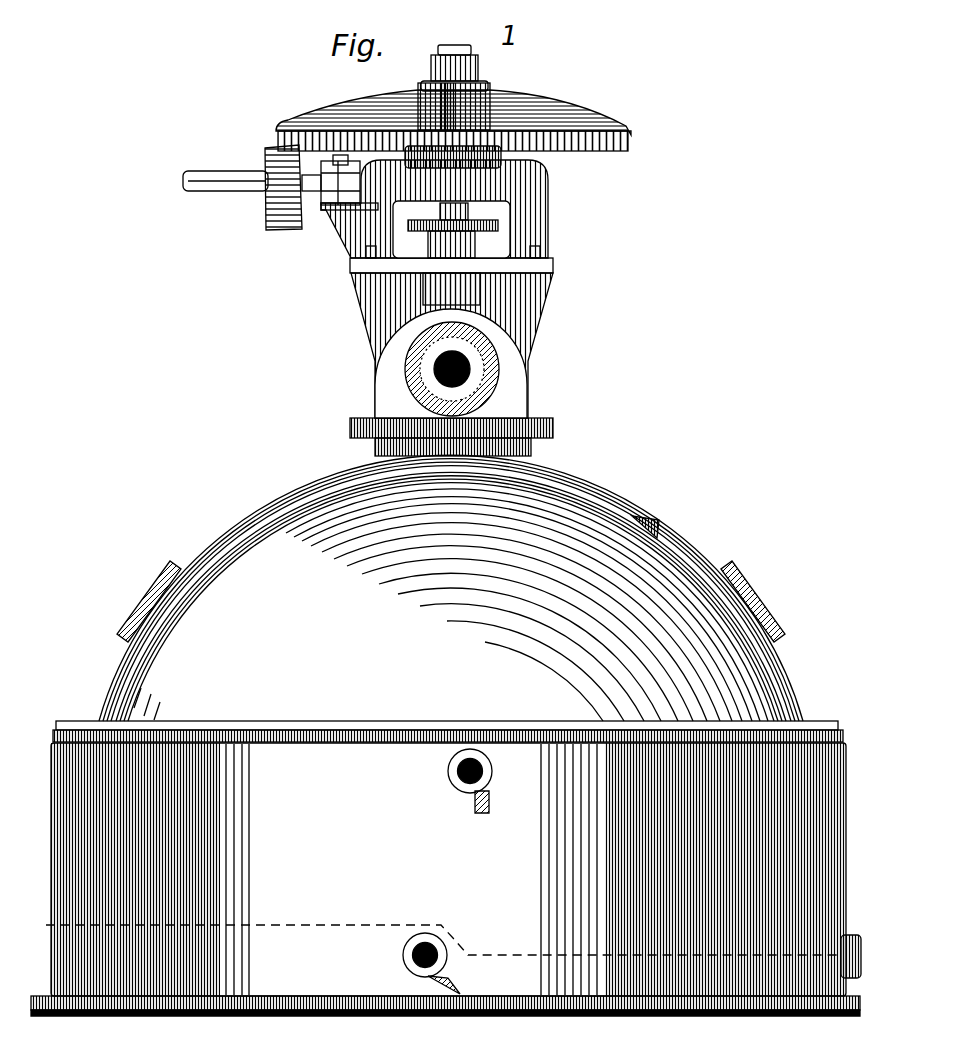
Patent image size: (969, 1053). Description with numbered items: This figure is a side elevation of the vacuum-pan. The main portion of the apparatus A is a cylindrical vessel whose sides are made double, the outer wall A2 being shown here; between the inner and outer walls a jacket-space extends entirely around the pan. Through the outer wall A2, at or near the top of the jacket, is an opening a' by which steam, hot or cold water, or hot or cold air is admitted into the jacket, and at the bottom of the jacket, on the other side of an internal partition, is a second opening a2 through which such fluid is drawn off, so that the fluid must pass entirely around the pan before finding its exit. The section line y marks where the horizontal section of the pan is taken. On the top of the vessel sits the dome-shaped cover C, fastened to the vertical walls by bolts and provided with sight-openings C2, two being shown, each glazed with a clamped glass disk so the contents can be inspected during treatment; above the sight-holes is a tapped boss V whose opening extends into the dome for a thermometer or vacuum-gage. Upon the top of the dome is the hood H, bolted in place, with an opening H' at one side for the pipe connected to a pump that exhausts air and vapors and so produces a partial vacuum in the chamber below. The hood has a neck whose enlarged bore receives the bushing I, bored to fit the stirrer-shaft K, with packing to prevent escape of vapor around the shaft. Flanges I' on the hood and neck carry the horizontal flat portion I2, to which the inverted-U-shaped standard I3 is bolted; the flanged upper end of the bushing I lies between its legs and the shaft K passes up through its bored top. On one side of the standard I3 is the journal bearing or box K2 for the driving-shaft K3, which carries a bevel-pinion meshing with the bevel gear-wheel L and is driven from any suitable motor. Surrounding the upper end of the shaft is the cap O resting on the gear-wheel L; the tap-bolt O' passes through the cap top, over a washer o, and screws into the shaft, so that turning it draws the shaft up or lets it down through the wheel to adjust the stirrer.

The main portion of the apparatus A is at (445, 868).
The outer wall A2 is at (472, 807).
The opening a' is at (452, 771).
The second opening a2 is at (395, 947).
The dome-shaped cover C is at (451, 588).
The openings C2 is at (448, 601).
The tapped boss V is at (648, 510).
The section line y is at (445, 947).
The hood H is at (462, 363).
The opening H' is at (451, 289).
The bushing I is at (457, 245).
The flanges I' is at (445, 364).
The horizontal flat portion I2 is at (545, 258).
The standard I3 is at (546, 212).
The stirrer-shaft K is at (460, 204).
The journal bearing or box K2 is at (350, 180).
The driving-shaft K3 is at (220, 183).
The bevel gear-wheel L is at (457, 117).
The cap O is at (460, 78).
The washer o is at (463, 47).
The tap-bolt O' is at (464, 41).